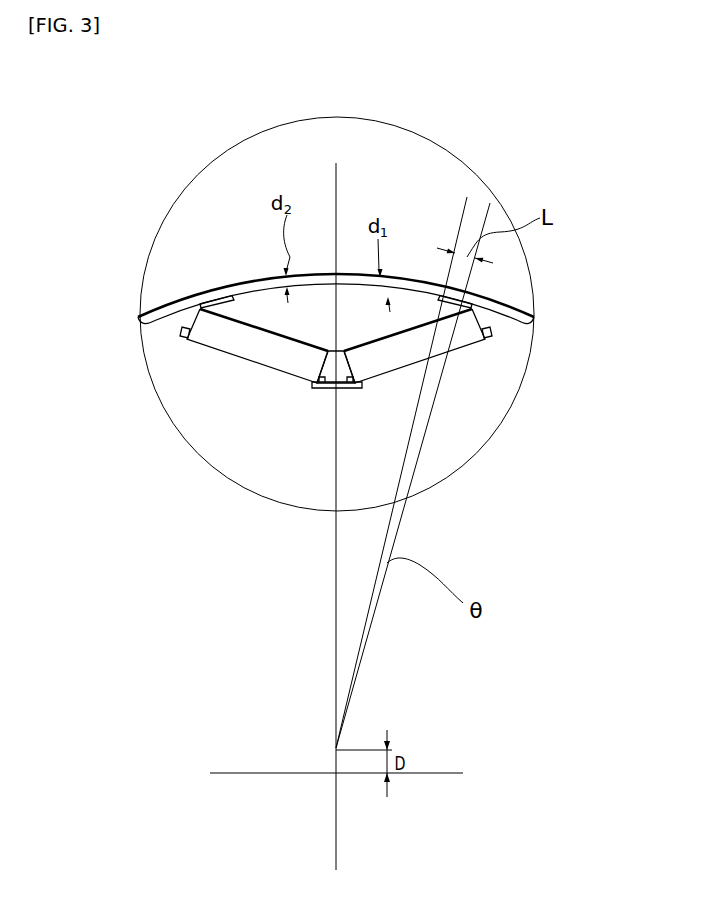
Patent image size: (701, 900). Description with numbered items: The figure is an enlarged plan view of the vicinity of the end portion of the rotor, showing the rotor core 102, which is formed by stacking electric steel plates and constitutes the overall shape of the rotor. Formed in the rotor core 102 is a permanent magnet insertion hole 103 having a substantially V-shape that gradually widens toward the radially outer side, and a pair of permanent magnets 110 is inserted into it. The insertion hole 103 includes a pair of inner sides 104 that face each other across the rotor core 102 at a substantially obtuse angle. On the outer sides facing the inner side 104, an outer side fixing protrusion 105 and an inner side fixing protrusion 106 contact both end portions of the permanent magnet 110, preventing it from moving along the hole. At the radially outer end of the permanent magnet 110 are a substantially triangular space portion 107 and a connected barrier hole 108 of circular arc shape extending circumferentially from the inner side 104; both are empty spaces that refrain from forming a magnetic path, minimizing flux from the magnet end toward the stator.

The rotor core 102 is at (312, 277).
The permanent magnet insertion hole 103 is at (330, 390).
The inner side 104 is at (268, 331).
The outer side fixing protrusion 105 is at (185, 339).
The inner side fixing protrusion 106 is at (317, 390).
The space portion 107 is at (162, 303).
The barrier hole 108 is at (224, 296).
The permanent magnet 110 is at (233, 340).